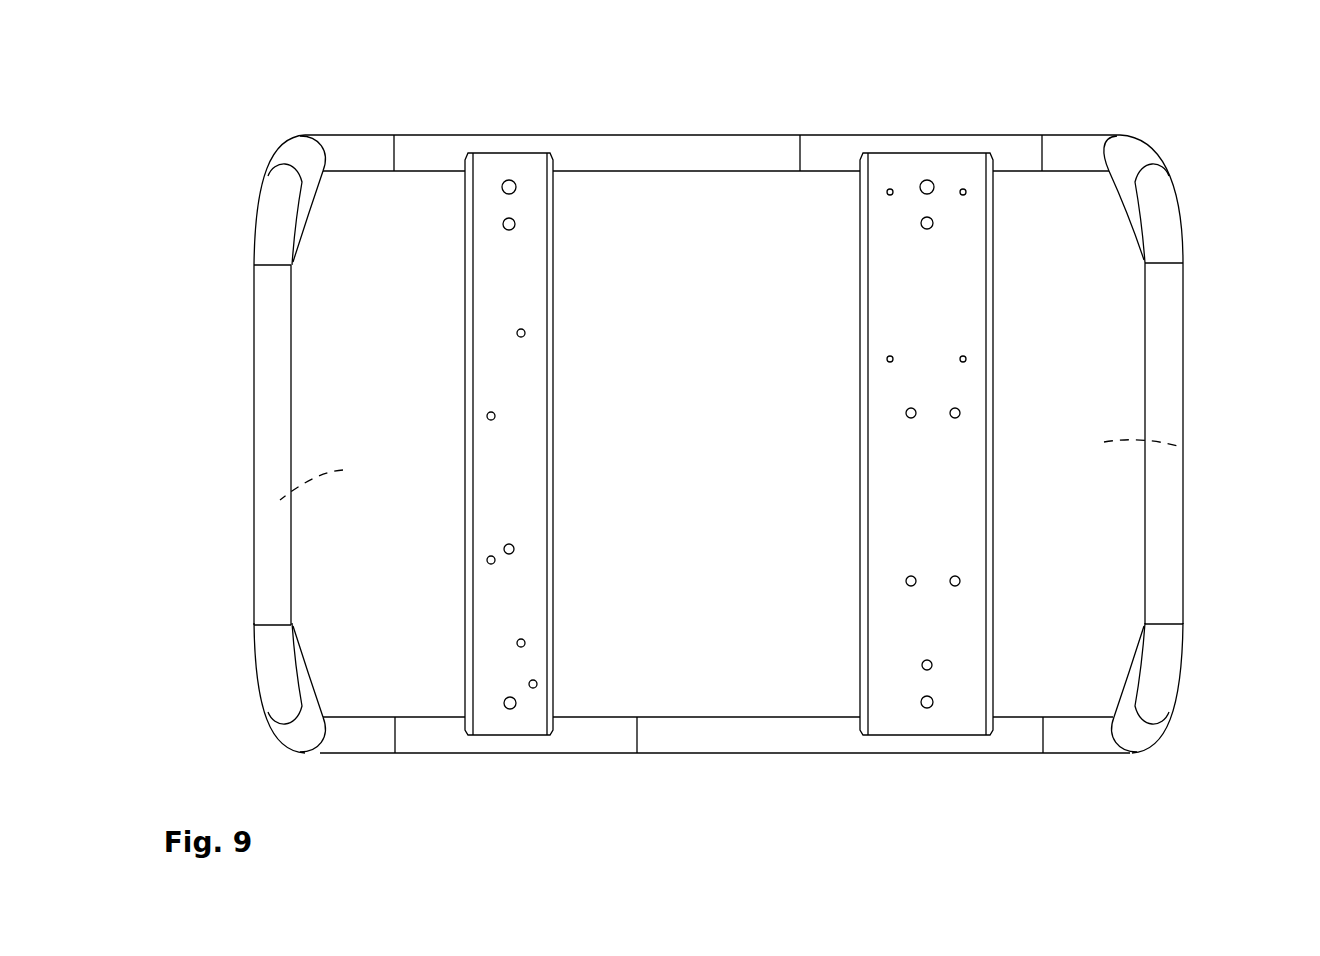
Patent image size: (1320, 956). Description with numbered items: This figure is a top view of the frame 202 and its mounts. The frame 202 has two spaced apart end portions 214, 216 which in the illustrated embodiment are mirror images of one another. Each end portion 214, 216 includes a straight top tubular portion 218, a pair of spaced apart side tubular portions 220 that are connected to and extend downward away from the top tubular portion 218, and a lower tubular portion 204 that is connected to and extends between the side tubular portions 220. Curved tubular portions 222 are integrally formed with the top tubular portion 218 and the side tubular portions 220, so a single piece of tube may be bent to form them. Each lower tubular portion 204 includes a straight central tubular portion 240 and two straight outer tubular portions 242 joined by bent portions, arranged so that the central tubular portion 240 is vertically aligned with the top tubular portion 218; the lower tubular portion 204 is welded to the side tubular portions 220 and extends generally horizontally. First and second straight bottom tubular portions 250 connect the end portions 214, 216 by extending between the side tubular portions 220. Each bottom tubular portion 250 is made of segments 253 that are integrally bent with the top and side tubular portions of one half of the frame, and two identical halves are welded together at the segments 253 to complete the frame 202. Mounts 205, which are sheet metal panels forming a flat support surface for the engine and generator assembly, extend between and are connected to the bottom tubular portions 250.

The frame 202 is at (749, 32).
The lower tubular portion 204 is at (310, 213).
The mount 205 is at (518, 302).
The first end portion 214 is at (300, 443).
The second end portion 216 is at (1197, 382).
The top tubular portion 218 is at (262, 400).
The side tubular portion 220 is at (286, 152).
The curved tubular portion 222 is at (272, 202).
The straight central tubular portion 240 is at (729, 465).
The straight outer tubular portion 242 is at (298, 223).
The bottom tubular portion 250 is at (748, 146).
The segment 253 is at (474, 138).